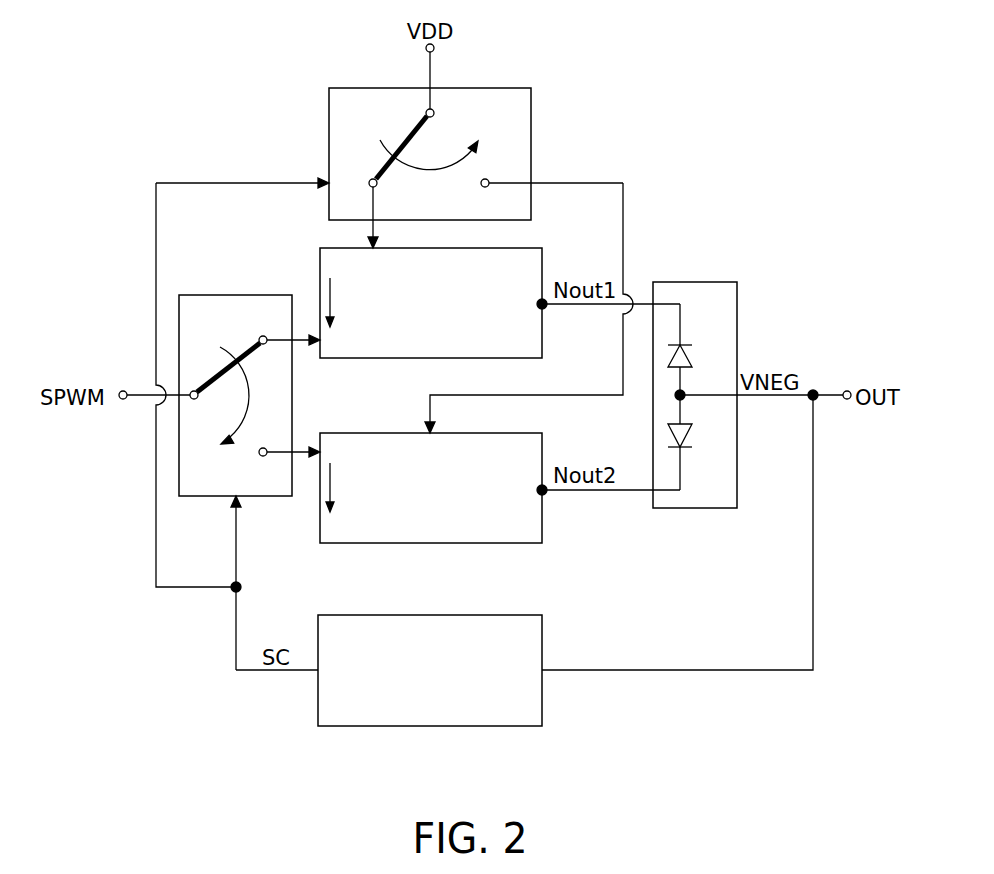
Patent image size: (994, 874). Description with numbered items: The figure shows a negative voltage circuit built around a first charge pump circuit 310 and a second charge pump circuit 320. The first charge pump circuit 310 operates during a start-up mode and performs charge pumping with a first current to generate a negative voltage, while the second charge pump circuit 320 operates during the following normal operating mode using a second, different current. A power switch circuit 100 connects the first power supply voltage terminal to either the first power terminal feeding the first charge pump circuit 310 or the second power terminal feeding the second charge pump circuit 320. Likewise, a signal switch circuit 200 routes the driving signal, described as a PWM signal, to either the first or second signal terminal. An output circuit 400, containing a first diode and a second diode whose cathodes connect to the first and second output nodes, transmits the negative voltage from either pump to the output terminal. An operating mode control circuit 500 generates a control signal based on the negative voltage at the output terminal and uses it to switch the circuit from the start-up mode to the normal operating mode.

The power switch circuit 100 is at (531, 128).
The signal switch circuit 200 is at (236, 295).
The first charge pump circuit 310 is at (373, 358).
The second charge pump circuit 320 is at (373, 543).
The output circuit 400 is at (693, 282).
The operating mode control circuit 500 is at (370, 726).